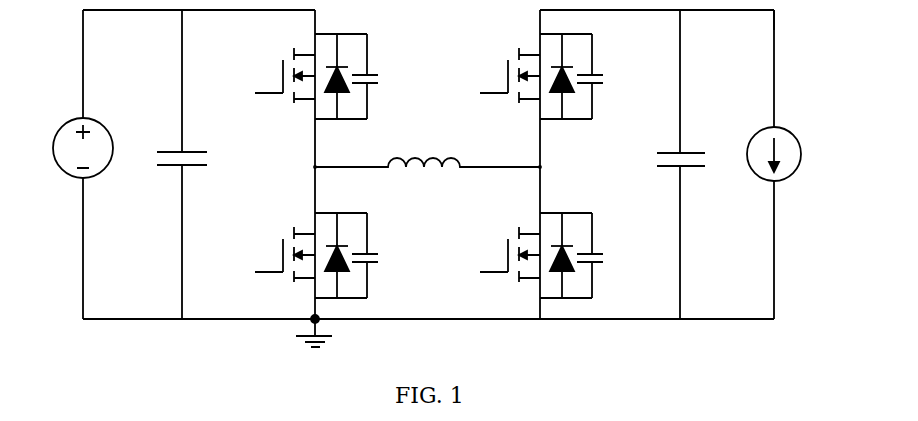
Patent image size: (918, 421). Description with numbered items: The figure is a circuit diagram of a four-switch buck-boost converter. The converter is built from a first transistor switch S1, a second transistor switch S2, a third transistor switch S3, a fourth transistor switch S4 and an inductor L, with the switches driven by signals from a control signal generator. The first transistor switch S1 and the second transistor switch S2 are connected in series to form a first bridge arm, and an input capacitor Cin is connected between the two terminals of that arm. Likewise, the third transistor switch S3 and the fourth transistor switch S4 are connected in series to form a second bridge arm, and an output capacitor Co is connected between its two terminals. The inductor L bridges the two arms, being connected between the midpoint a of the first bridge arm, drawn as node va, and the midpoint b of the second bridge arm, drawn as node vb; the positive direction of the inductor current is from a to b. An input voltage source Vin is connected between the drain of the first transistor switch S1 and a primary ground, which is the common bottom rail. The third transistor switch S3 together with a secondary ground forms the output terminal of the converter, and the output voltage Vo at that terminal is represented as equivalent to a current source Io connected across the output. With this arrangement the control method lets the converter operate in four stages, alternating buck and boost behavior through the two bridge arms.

The input voltage source Vin is at (95, 164).
The input capacitor Cin is at (200, 164).
The first transistor switch S1 is at (312, 76).
The second transistor switch S2 is at (312, 255).
The third transistor switch S3 is at (536, 76).
The fourth transistor switch S4 is at (536, 255).
The inductor L is at (427, 144).
The midpoint a of the first bridge arm va is at (299, 167).
The midpoint b of the second bridge arm vb is at (555, 167).
The output capacitor Co is at (667, 164).
The current source Io is at (754, 164).
The output voltage Vo is at (749, 41).